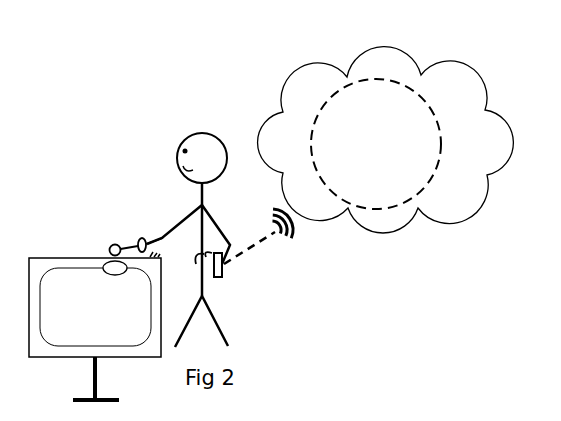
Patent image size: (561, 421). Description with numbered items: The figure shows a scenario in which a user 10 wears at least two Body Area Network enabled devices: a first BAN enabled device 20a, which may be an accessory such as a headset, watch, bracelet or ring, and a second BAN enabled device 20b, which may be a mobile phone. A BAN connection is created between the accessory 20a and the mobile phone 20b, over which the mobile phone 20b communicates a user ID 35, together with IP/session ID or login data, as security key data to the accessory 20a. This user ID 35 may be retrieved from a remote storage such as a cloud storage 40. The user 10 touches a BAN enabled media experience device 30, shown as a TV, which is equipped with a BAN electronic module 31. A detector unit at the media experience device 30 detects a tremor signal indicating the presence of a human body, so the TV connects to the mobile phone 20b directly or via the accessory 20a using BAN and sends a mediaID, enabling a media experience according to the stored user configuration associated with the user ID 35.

The user 10 is at (191, 232).
The first BAN enabled device 20a is at (142, 238).
The second BAN enabled device 20b is at (247, 255).
The BAN enabled media experience device 30 is at (50, 366).
The BAN electronic module 31 is at (97, 261).
The user ID 35 is at (355, 190).
The cloud storage 40 is at (424, 66).